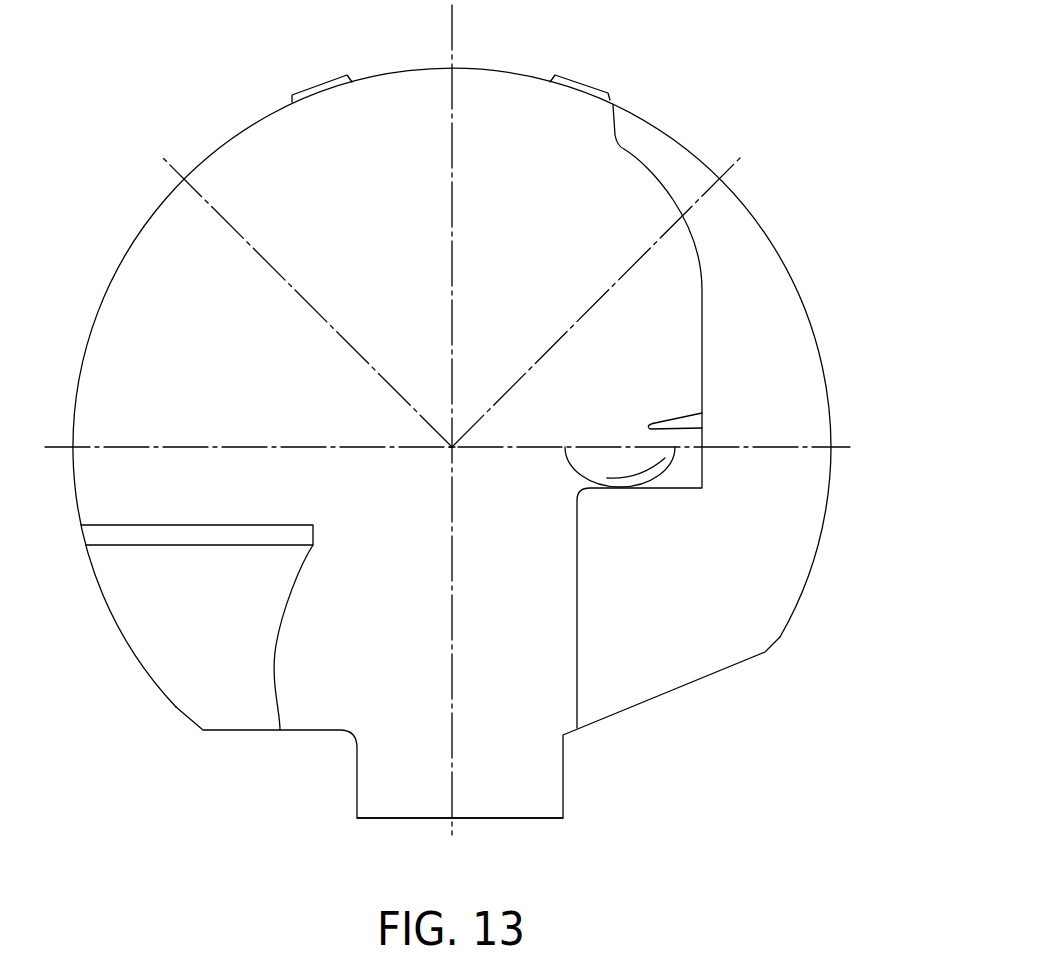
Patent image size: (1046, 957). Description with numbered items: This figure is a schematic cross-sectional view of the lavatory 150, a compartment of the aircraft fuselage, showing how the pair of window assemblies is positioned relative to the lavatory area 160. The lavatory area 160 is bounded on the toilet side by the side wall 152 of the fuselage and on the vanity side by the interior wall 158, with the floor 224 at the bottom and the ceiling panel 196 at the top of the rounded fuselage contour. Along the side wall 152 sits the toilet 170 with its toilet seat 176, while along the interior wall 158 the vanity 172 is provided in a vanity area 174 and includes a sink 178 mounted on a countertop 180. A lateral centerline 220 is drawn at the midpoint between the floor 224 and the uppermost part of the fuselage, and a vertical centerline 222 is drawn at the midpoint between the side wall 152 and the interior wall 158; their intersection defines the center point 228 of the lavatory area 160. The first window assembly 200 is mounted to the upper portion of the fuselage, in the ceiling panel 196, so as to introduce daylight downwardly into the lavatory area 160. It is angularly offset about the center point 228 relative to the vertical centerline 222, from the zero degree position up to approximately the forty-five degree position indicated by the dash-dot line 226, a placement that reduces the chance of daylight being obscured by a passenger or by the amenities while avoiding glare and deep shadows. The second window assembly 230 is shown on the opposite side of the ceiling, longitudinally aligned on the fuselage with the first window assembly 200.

The lavatory 150 is at (130, 287).
The side wall 152 is at (75, 493).
The interior wall 158 is at (825, 413).
The lavatory area 160 is at (100, 398).
The toilet 170 is at (148, 633).
The vanity 172 is at (770, 366).
The vanity area 174 is at (517, 492).
The toilet seat 176 is at (223, 530).
The sink 178 is at (592, 452).
The countertop 180 is at (667, 488).
The ceiling panel 196 is at (406, 68).
The first window assembly 200 is at (620, 78).
The lateral centerline 220 is at (244, 443).
The vertical centerline 222 is at (450, 625).
The floor 224 is at (390, 818).
The dash-dot line 226 is at (573, 330).
The center point 228 is at (449, 452).
The second window assembly 230 is at (276, 83).